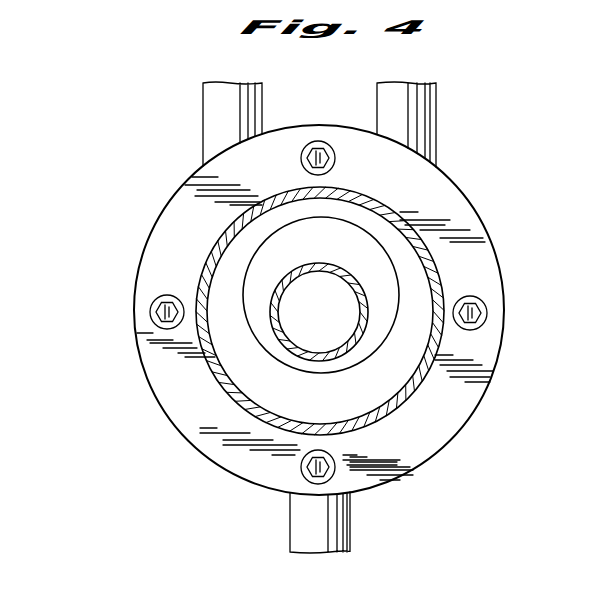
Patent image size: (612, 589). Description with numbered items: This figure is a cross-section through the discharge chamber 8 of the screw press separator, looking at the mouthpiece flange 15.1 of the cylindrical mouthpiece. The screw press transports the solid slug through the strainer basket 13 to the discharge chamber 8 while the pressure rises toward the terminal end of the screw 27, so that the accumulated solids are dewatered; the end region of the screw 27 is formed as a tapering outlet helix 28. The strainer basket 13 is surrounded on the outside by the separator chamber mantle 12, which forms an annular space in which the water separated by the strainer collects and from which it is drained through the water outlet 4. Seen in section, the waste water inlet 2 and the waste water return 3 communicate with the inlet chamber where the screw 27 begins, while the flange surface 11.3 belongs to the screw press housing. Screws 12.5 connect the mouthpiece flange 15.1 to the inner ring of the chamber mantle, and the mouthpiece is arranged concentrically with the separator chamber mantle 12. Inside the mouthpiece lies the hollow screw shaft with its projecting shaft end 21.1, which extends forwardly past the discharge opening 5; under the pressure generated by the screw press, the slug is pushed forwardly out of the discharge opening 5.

The waste water inlet 2 is at (437, 113).
The waste water return 3 is at (203, 116).
The water outlet 4 is at (290, 528).
The discharge opening 5 is at (432, 258).
The discharge chamber 8 is at (365, 383).
The flange surface 11.3 is at (173, 230).
The separator chamber mantle 12 is at (497, 253).
The screws 12.5 is at (318, 158).
The strainer basket 13 is at (603, 58).
The mouthpiece flange 15.1 is at (412, 184).
The shaft end 21.1 is at (368, 300).
The screw 27 is at (258, 237).
The tapering outlet helix 28 is at (357, 254).